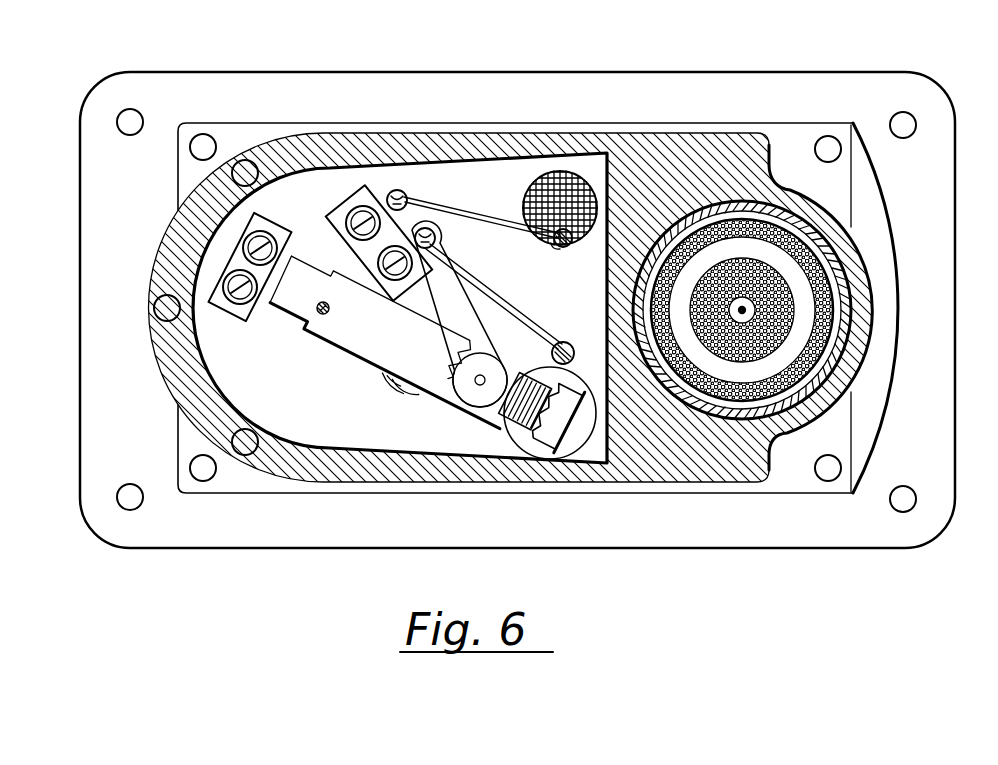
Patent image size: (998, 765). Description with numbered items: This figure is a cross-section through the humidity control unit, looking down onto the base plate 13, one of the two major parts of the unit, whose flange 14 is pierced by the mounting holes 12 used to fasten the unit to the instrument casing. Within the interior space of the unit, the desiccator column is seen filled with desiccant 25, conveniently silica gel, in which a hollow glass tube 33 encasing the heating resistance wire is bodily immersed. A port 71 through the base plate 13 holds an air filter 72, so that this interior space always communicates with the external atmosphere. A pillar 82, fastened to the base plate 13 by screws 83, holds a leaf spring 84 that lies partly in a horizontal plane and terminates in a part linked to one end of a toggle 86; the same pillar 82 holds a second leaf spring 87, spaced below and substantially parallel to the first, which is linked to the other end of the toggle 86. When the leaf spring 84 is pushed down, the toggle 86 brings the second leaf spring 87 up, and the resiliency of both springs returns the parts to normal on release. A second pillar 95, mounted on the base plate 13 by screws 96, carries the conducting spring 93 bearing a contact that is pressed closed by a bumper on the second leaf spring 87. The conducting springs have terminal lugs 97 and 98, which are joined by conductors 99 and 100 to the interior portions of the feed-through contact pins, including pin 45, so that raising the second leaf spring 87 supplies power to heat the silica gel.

The mounting holes 12 is at (907, 136).
The base plate 13 is at (50, 295).
The flange 14 is at (927, 212).
The desiccant 25 is at (737, 237).
The glass tube 33 is at (749, 300).
The feed-through contact pin 45 is at (566, 249).
The port 71 is at (534, 192).
The air filter 72 is at (548, 240).
The pillar 82 is at (252, 224).
The screws 83 is at (240, 303).
The leaf spring 84 is at (366, 340).
The toggle 86 is at (520, 440).
The second leaf spring 87 is at (490, 410).
The conducting spring 93 is at (455, 320).
The pillar 95 is at (339, 222).
The screws 96 is at (357, 216).
The terminal lug 97 is at (404, 192).
The terminal lug 98 is at (436, 234).
The conductor 99 is at (480, 214).
The conductor 100 is at (490, 285).